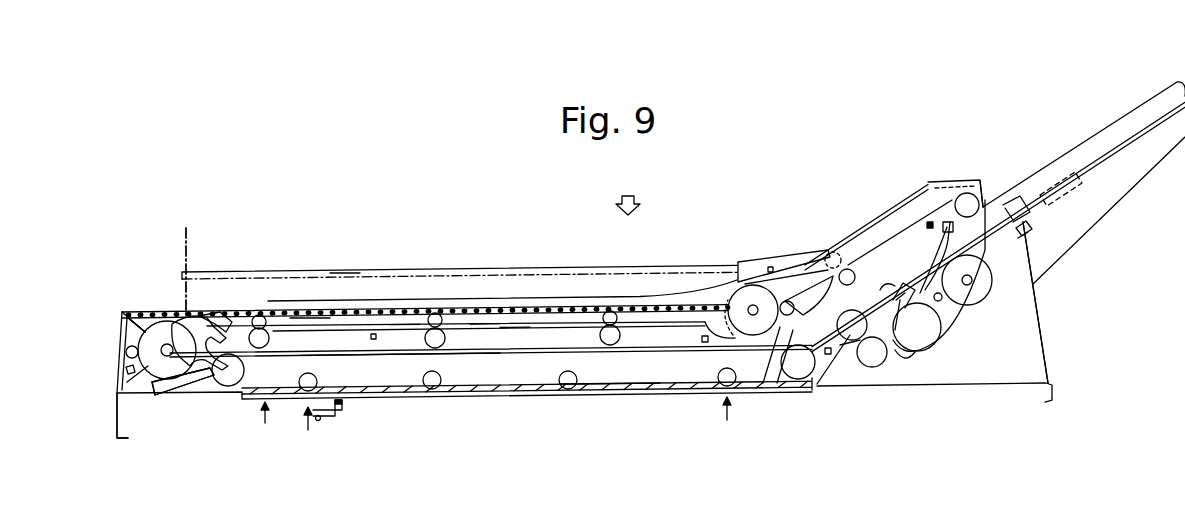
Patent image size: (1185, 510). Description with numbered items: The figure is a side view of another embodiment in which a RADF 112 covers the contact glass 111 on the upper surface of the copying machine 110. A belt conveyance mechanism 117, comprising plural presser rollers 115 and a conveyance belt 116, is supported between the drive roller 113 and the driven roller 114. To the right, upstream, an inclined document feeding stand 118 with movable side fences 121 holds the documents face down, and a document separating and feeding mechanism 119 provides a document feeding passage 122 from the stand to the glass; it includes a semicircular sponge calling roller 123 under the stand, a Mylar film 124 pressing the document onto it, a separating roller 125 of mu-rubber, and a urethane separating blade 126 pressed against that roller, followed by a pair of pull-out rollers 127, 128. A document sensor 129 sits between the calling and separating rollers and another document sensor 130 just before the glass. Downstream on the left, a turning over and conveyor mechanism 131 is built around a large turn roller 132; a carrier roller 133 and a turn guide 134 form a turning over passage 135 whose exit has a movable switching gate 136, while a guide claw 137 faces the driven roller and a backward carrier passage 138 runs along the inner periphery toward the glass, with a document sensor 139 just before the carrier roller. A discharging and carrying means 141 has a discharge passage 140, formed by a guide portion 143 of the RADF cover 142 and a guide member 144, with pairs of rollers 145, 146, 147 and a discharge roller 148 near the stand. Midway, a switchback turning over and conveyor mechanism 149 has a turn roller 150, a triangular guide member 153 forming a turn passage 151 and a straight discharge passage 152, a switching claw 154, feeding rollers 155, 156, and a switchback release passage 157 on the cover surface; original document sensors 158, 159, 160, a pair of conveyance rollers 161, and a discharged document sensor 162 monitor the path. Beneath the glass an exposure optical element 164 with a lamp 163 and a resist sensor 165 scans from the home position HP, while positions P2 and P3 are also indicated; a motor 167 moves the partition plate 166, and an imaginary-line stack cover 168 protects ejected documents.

The copying machine 110 is at (118, 421).
The contact glass 111 is at (522, 397).
The RADF 112 is at (628, 193).
The drive roller 113 is at (798, 380).
The driven roller 114 is at (230, 386).
The presser roller 115 is at (300, 391).
The conveyance belt 116 is at (483, 357).
The belt conveyance mechanism 117 is at (607, 382).
The document feeding stand 118 is at (1132, 150).
The document separating and feeding mechanism 119 is at (928, 343).
The movable side fences 121 is at (1130, 118).
The document feeding passage 122 is at (915, 352).
The calling roller 123 is at (1037, 283).
The Mylar film 124 is at (940, 212).
The separating roller 125 is at (941, 327).
The separating blade 126 is at (893, 266).
The pull-out roller 127 is at (856, 312).
The pull-out roller 128 is at (883, 362).
The document sensor 129 is at (945, 300).
The document sensor 130 is at (827, 372).
The turning over and conveyor mechanism 131 is at (137, 308).
The turn roller 132 is at (140, 346).
The carrier roller 133 is at (125, 352).
The turn guide 134 is at (158, 322).
The turning over passage 135 is at (133, 317).
The switching gate 136 is at (208, 312).
The guide claw 137 is at (190, 373).
The backward carrier passage 138 is at (213, 318).
The document sensor 139 is at (127, 373).
The discharge passage 140 is at (341, 273).
The discharging and carrying means 141 is at (405, 330).
The RADF cover 142 is at (302, 317).
The guide portion 143 is at (483, 322).
The guide member 144 is at (512, 327).
The pair of rollers 145 is at (262, 318).
The pair of rollers 146 is at (440, 314).
The pair of rollers 147 is at (600, 325).
The discharge roller 148 is at (990, 178).
The switchback turning over and conveyor mechanism 149 is at (723, 303).
The turn roller 150 is at (735, 290).
The turn passage 151 is at (797, 300).
The original document straight discharge passage 152 is at (843, 355).
The triangular guide member 153 is at (822, 285).
The switching claw 154 is at (774, 363).
The feeding roller 155 is at (827, 356).
The feeding roller 156 is at (768, 262).
The switchback release passage 157 is at (683, 293).
The original document sensor 158 is at (374, 333).
The original document sensor 159 is at (704, 343).
The original document sensor 160 is at (782, 270).
The pair of conveyance rollers 161 is at (848, 269).
The discharged document sensor 162 is at (929, 221).
The lamp 163 is at (318, 424).
The exposure optical element 164 is at (338, 428).
The resist sensor 165 is at (348, 408).
The partition plate 166 is at (1010, 196).
The motor 167 is at (1062, 170).
The stack cover 168 is at (190, 255).
The position P2 is at (266, 422).
The position P3 is at (306, 433).
The home position HP is at (727, 421).